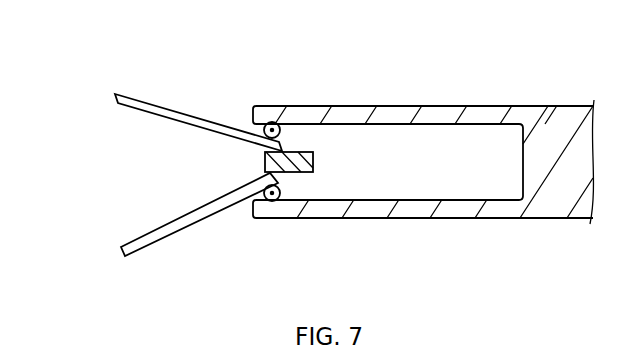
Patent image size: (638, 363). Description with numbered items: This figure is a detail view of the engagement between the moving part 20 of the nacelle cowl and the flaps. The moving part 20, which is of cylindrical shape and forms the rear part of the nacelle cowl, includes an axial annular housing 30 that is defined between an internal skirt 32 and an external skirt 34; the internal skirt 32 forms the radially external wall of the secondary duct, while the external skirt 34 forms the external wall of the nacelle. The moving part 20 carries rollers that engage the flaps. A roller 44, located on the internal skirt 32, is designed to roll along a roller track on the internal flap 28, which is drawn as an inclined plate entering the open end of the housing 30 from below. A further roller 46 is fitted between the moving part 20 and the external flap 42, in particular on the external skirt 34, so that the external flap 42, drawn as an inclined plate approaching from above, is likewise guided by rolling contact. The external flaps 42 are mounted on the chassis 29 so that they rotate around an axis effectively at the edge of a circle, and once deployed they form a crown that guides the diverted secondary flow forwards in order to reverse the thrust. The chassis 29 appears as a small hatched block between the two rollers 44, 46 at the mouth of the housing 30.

The moving part 20 is at (423, 167).
The flap 28 is at (160, 232).
The chassis 29 is at (296, 171).
The axial annular housing 30 is at (460, 178).
The internal skirt 32 is at (373, 213).
The external skirt 34 is at (383, 112).
The flap 42 is at (152, 106).
The roller 44 is at (272, 194).
The roller 46 is at (272, 128).